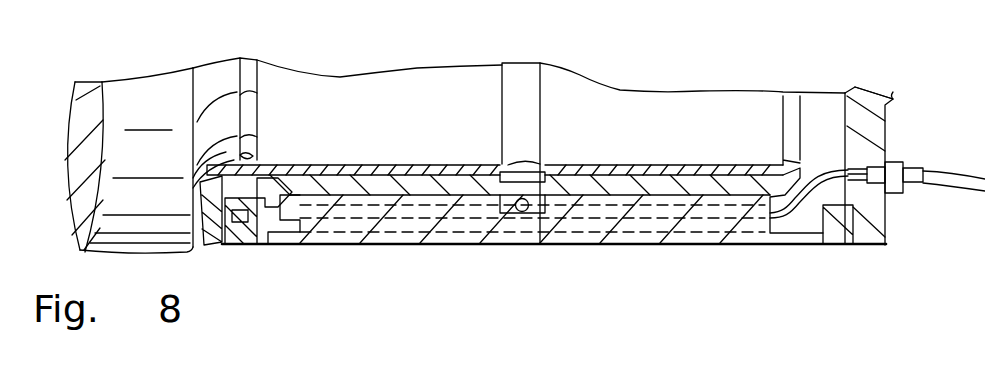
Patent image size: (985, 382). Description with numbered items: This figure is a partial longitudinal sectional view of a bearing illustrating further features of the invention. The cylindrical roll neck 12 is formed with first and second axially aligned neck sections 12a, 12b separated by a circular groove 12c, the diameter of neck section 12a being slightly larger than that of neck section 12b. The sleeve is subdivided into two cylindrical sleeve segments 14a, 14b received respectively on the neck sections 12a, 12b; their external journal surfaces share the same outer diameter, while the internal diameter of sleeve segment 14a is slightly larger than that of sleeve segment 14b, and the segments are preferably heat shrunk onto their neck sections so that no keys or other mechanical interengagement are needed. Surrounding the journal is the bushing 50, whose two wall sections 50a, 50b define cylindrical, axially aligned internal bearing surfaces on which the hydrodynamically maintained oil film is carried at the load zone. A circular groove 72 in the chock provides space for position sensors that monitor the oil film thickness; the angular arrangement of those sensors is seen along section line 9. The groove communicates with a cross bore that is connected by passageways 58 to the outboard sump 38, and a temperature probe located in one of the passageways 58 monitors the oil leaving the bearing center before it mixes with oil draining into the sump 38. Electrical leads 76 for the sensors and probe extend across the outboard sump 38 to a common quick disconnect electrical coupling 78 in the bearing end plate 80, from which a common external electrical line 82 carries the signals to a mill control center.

The roll neck 12 is at (604, 73).
The first neck section 12a is at (372, 127).
The second neck section 12b is at (649, 130).
The circular groove 12c is at (517, 87).
The section line 9- 9 is at (518, 145).
The first sleeve segment 14a is at (298, 170).
The second sleeve segment 14b is at (673, 165).
The bushing 50 is at (788, 187).
The first bushing wall section 50a is at (437, 183).
The second bushing wall section 50b is at (587, 187).
The passageways 58 is at (637, 208).
The circular groove 72 is at (543, 212).
The outboard sump 38 is at (803, 221).
The electrical leads 76 is at (848, 168).
The quick disconnect electrical coupling 78 is at (895, 195).
The bearing end plate 80 is at (893, 96).
The external electrical line 82 is at (953, 182).